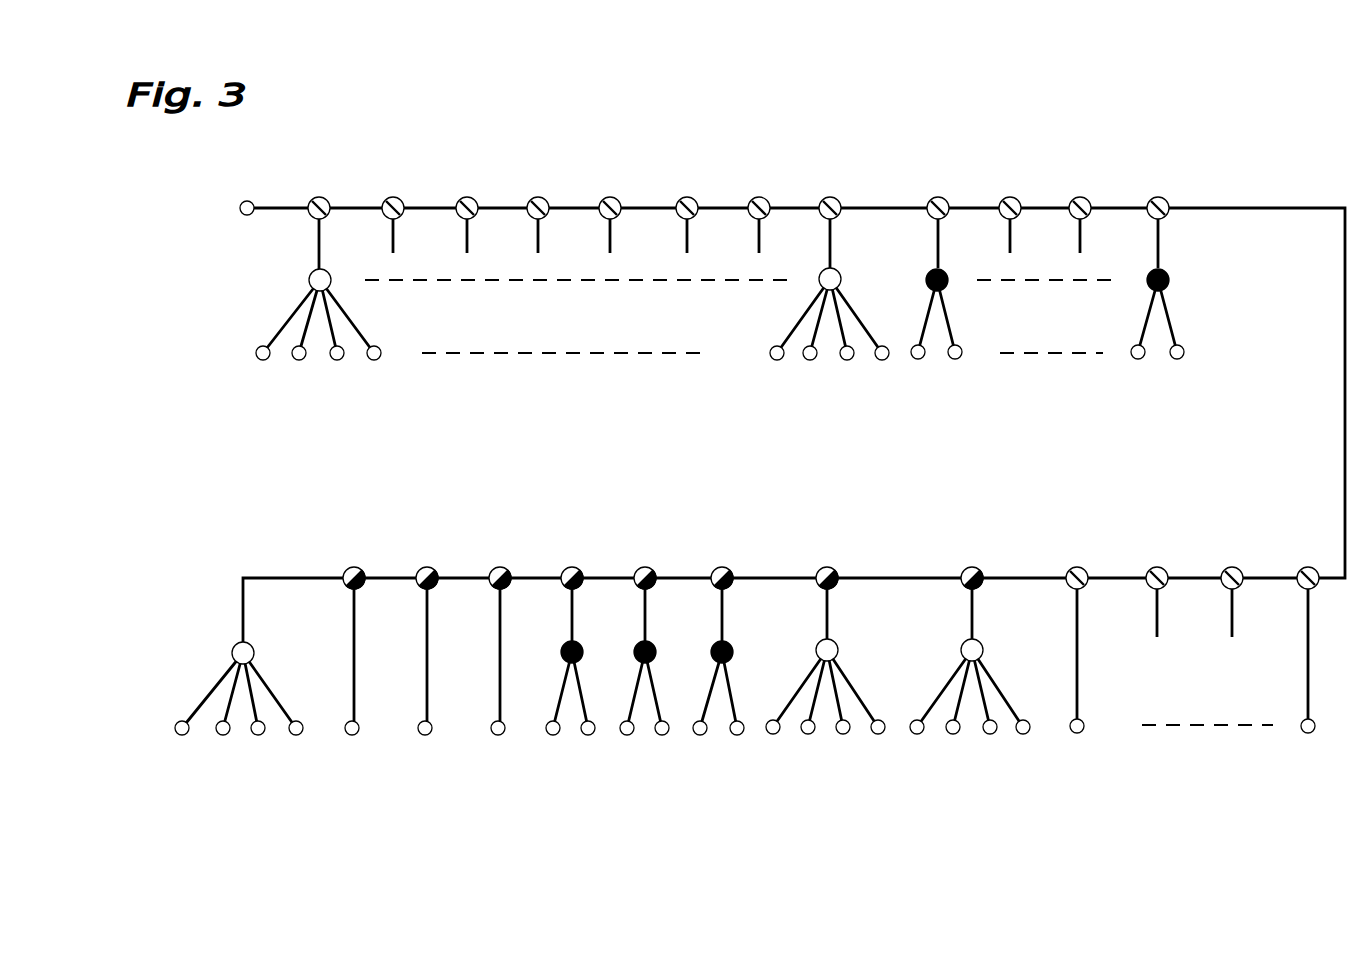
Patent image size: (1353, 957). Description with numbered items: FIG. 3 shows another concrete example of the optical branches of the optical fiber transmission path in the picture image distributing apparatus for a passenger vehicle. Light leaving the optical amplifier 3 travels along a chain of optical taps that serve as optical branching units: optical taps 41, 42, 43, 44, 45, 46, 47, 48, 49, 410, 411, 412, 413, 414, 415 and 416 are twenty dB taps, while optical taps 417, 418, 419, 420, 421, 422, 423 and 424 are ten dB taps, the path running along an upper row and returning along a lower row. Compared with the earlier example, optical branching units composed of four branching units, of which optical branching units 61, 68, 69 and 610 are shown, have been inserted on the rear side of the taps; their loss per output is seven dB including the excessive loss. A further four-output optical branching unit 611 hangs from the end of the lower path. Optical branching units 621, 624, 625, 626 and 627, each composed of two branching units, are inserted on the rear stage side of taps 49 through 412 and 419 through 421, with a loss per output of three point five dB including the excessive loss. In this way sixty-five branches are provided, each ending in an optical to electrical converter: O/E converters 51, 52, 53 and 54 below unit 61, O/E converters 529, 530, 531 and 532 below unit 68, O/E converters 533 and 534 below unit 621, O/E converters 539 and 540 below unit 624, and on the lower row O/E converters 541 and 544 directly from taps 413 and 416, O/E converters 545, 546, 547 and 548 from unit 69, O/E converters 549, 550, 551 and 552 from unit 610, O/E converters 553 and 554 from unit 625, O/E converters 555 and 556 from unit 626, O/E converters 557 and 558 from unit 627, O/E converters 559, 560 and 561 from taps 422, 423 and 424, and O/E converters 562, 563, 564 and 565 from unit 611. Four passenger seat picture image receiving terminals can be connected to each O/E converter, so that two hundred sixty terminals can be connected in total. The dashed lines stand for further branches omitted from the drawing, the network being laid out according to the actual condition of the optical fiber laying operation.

The optical amplifier 3 is at (240, 208).
The optical tap 41 is at (324, 197).
The optical tap 42 is at (398, 197).
The optical tap 43 is at (472, 197).
The optical tap 44 is at (543, 197).
The optical tap 45 is at (615, 197).
The optical tap 46 is at (692, 197).
The optical tap 47 is at (764, 197).
The optical tap 48 is at (835, 197).
The optical tap 49 is at (943, 197).
The optical tap 410 is at (1015, 197).
The optical tap 411 is at (1085, 197).
The optical tap 412 is at (1163, 197).
The optical tap 413 is at (1313, 567).
The optical tap 414 is at (1237, 567).
The optical tap 415 is at (1162, 567).
The optical tap 416 is at (1082, 567).
The optical tap 417 is at (977, 567).
The optical tap 418 is at (832, 567).
The optical tap 419 is at (727, 567).
The optical tap 420 is at (650, 567).
The optical tap 421 is at (577, 567).
The optical tap 422 is at (505, 567).
The optical tap 423 is at (432, 567).
The optical tap 424 is at (359, 567).
The optical branching unit 61 is at (309, 278).
The optical branching unit 68 is at (841, 275).
The optical branching unit 69 is at (983, 652).
The optical branching unit 610 is at (838, 652).
The star coupler 611 is at (232, 653).
The optical branching unit 621 is at (968, 267).
The optical branching unit 624 is at (1169, 279).
The optical branching unit 625 is at (733, 652).
The optical branching unit 626 is at (656, 652).
The optical branching unit 627 is at (583, 652).
The O/E converter 51 is at (263, 360).
The O/E converter 52 is at (299, 360).
The O/E converter 53 is at (337, 360).
The O/E converter 54 is at (374, 360).
The O/E converter 529 is at (777, 360).
The O/E converter 530 is at (810, 360).
The O/E converter 531 is at (847, 360).
The O/E converter 532 is at (882, 360).
The O/E converter 533 is at (918, 360).
The O/E converter 534 is at (955, 360).
The O/E converter 539 is at (1138, 360).
The O/E converter 540 is at (1177, 360).
The O/E converter 541 is at (1308, 735).
The O/E converter 544 is at (1082, 733).
The O/E converter 545 is at (1025, 734).
The O/E converter 546 is at (990, 735).
The O/E converter 547 is at (953, 735).
The O/E converter 548 is at (917, 735).
The O/E converter 549 is at (878, 735).
The O/E converter 550 is at (843, 735).
The O/E converter 551 is at (808, 735).
The O/E converter 552 is at (773, 735).
The O/E converter 553 is at (737, 735).
The O/E converter 554 is at (700, 735).
The O/E converter 555 is at (662, 735).
The O/E converter 556 is at (627, 735).
The O/E converter 557 is at (588, 735).
The O/E converter 558 is at (553, 735).
The O/E converter 559 is at (498, 735).
The O/E converter 560 is at (425, 735).
The O/E converter 561 is at (352, 735).
The O/E converter 562 is at (296, 735).
The O/E converter 563 is at (258, 735).
The O/E converter 564 is at (223, 735).
The O/E converter 565 is at (182, 735).